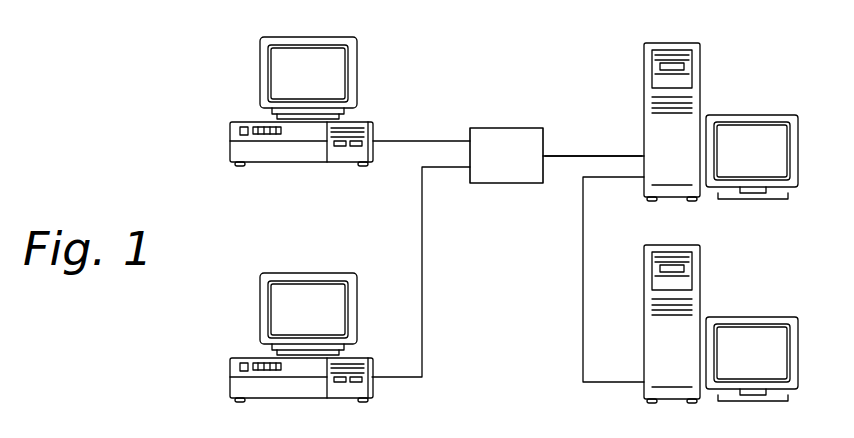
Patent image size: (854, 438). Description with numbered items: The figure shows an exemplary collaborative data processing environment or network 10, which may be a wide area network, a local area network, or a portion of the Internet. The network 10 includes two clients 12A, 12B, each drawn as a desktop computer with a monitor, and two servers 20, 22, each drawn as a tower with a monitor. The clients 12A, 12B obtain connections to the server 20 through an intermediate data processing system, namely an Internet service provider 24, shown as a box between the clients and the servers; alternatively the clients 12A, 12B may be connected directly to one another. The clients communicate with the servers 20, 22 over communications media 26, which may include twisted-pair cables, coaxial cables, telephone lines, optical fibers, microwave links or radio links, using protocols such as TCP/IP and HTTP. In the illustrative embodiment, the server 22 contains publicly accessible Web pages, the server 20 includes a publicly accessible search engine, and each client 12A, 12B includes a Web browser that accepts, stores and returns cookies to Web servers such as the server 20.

The network 10 is at (525, 43).
The client 12A is at (230, 142).
The client 12B is at (230, 380).
The Internet service provider 24 is at (505, 128).
The communications media 26 is at (597, 153).
The server 20 is at (700, 67).
The server 22 is at (700, 269).